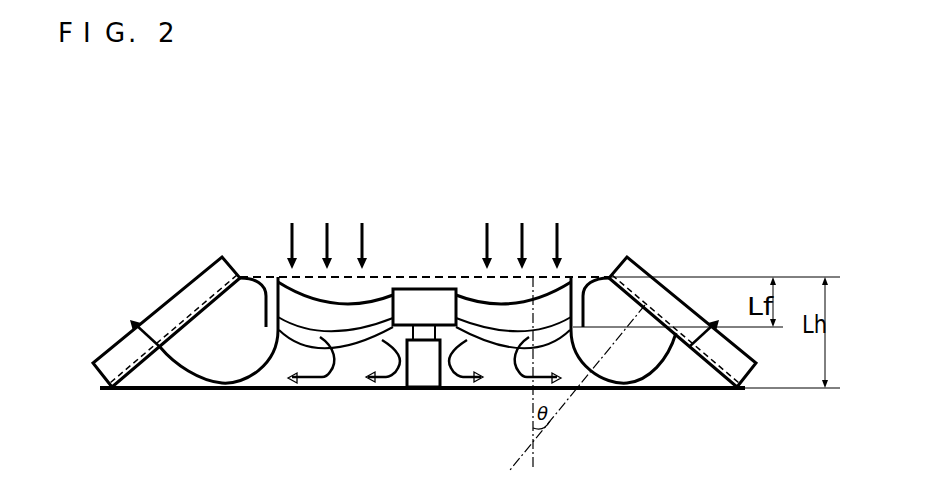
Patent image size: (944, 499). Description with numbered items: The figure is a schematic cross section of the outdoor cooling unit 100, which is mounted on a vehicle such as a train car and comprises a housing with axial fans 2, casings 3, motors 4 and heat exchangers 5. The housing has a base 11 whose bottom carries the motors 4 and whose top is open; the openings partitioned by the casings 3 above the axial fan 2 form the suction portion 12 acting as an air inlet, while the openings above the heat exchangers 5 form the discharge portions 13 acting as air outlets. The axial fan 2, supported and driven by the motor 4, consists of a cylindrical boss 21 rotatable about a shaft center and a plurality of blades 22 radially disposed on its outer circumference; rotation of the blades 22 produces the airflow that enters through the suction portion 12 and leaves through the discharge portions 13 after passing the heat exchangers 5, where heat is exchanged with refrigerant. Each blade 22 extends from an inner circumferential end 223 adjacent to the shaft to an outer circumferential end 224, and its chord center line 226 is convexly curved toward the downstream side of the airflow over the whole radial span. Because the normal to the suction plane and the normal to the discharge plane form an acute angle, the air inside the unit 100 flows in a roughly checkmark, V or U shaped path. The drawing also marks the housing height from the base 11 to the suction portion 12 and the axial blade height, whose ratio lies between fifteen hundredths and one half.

The axial fan 2 is at (422, 287).
The casing 3 is at (257, 277).
The motor 4 is at (420, 363).
The heat exchanger 5 is at (208, 280).
The base 11 is at (263, 390).
The suction portion 12 is at (317, 275).
The discharge portion 13 is at (158, 352).
The boss 21 is at (448, 302).
The blade 22 is at (500, 317).
The outdoor cooling unit 100 is at (667, 222).
The inner circumferential end 223 is at (460, 300).
The outer circumferential end 224 is at (583, 307).
The chord center line 226 is at (540, 327).